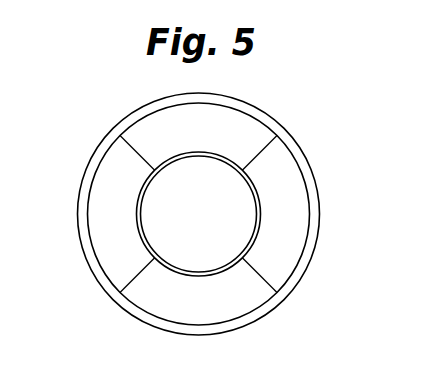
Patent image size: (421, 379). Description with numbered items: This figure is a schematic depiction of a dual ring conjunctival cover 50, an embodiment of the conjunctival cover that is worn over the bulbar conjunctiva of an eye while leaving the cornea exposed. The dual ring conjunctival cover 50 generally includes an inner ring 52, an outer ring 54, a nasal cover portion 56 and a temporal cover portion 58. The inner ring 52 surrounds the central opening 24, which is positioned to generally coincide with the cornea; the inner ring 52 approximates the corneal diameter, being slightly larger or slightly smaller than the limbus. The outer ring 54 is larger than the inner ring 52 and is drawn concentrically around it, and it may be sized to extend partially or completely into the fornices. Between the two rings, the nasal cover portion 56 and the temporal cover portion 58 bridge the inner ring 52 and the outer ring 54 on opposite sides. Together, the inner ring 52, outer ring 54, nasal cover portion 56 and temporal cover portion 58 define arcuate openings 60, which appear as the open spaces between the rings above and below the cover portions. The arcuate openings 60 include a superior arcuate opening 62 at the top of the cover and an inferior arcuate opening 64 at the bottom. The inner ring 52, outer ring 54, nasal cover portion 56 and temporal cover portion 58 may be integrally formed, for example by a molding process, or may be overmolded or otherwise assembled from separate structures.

The central opening 24 is at (167, 197).
The dual ring conjunctival cover 50 is at (290, 123).
The inner ring 52 is at (260, 198).
The outer ring 54 is at (316, 226).
The nasal cover portion 56 is at (100, 238).
The temporal cover portion 58 is at (290, 238).
The arcuate openings 60 is at (207, 120).
The superior arcuate opening 62 is at (160, 122).
The inferior arcuate opening 64 is at (160, 303).